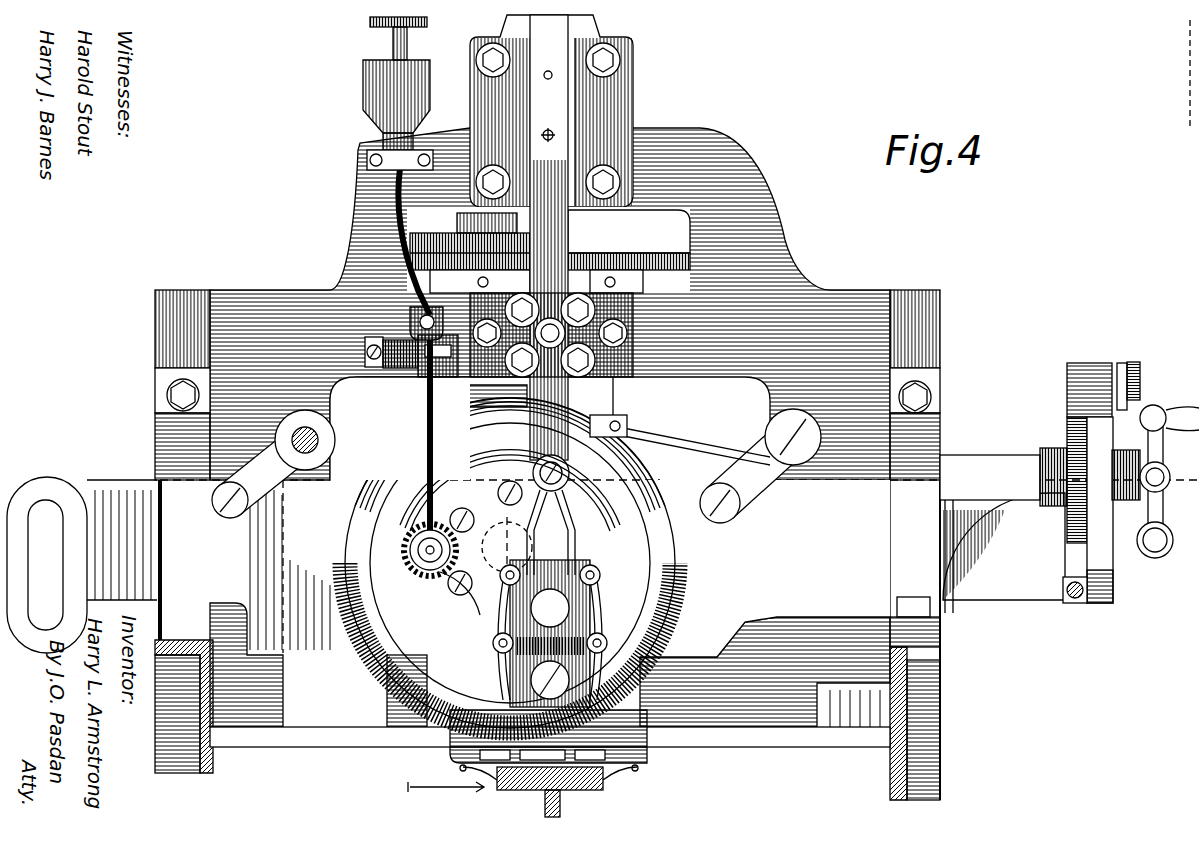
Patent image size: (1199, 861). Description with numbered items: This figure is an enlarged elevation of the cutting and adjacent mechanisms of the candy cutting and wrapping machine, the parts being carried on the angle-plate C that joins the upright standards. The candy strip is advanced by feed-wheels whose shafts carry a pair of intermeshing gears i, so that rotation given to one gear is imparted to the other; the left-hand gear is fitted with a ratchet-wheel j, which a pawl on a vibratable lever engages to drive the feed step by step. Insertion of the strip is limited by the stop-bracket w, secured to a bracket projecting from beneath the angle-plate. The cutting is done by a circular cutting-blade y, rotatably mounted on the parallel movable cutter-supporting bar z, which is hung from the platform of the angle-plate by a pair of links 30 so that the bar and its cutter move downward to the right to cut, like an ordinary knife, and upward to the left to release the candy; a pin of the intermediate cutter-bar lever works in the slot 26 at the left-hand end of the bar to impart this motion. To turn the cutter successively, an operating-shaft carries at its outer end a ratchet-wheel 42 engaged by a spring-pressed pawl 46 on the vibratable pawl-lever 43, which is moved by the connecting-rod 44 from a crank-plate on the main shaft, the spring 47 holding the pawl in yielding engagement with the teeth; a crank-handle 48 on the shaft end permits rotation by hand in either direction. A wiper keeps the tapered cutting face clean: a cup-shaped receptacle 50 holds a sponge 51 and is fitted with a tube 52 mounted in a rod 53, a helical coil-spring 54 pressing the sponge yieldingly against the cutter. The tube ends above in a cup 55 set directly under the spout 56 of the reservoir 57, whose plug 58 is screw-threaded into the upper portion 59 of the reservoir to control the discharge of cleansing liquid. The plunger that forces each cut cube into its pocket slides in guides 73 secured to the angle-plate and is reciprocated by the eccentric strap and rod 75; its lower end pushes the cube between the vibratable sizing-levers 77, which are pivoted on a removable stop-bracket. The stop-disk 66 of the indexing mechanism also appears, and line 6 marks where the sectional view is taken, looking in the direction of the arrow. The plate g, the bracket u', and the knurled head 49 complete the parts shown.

The angle-plate C is at (812, 290).
The cutter-supporting bar z is at (765, 568).
The slot 26 is at (82, 565).
The eccentric strap and rod 75 is at (480, 97).
The guides 73 is at (620, 95).
The ratchet-wheel j is at (395, 230).
The intermeshing gears i is at (395, 262).
The stop-bracket w is at (551, 295).
The circular cutting-blade y is at (440, 470).
The plate g is at (400, 428).
The links 30 is at (760, 445).
The cup 55 is at (415, 320).
The helical coil-spring 54 is at (392, 365).
The rod 53 is at (430, 355).
The tube 52 is at (428, 470).
The sponge 51 is at (405, 560).
The cup-shaped receptacle 50 is at (440, 593).
The vibratable sizing-levers 77 is at (510, 622).
The base block u' is at (548, 765).
The stop-disk 66 is at (562, 810).
The section line 6 is at (446, 803).
The spout 56 is at (395, 175).
The reservoir 57 is at (372, 92).
The upper portion of the reservoir 59 is at (393, 50).
The plug 58 is at (395, 30).
The spring-pressed pawl 46 is at (1072, 397).
The ratchet-wheel 42 is at (1072, 540).
The vibratable pawl-lever 43 is at (1105, 572).
The spring 47 is at (1122, 362).
The knob 49 is at (1142, 382).
The crank-handle 48 is at (1160, 460).
The connecting-rod 44 is at (1068, 605).